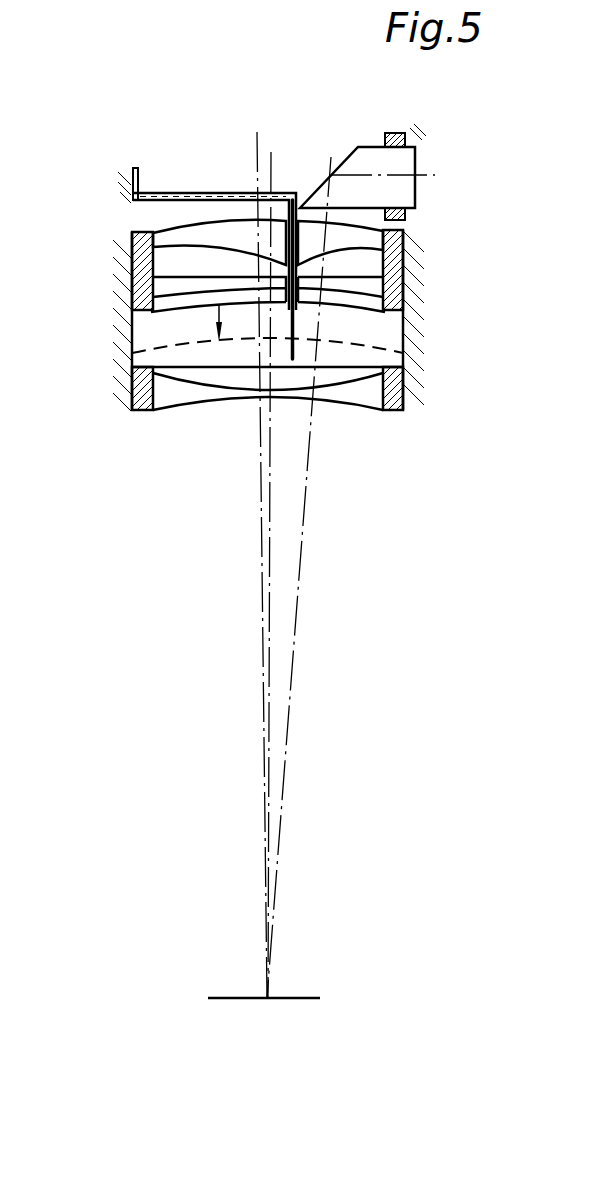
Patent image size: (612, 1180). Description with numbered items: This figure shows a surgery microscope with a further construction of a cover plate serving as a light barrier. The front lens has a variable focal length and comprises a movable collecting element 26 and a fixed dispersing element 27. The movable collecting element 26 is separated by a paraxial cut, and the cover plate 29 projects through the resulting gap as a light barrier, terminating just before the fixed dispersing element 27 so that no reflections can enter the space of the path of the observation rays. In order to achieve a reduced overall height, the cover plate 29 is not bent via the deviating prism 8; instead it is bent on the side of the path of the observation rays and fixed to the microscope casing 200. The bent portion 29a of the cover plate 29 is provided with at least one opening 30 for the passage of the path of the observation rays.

The deviating prism 8 is at (409, 162).
The movable collecting element 26 is at (405, 282).
The fixed dispersing element 27 is at (403, 412).
The cover plate 29 is at (296, 244).
The bent portion 29a is at (181, 192).
The opening 30 is at (241, 192).
The microscope casing 200 is at (126, 193).